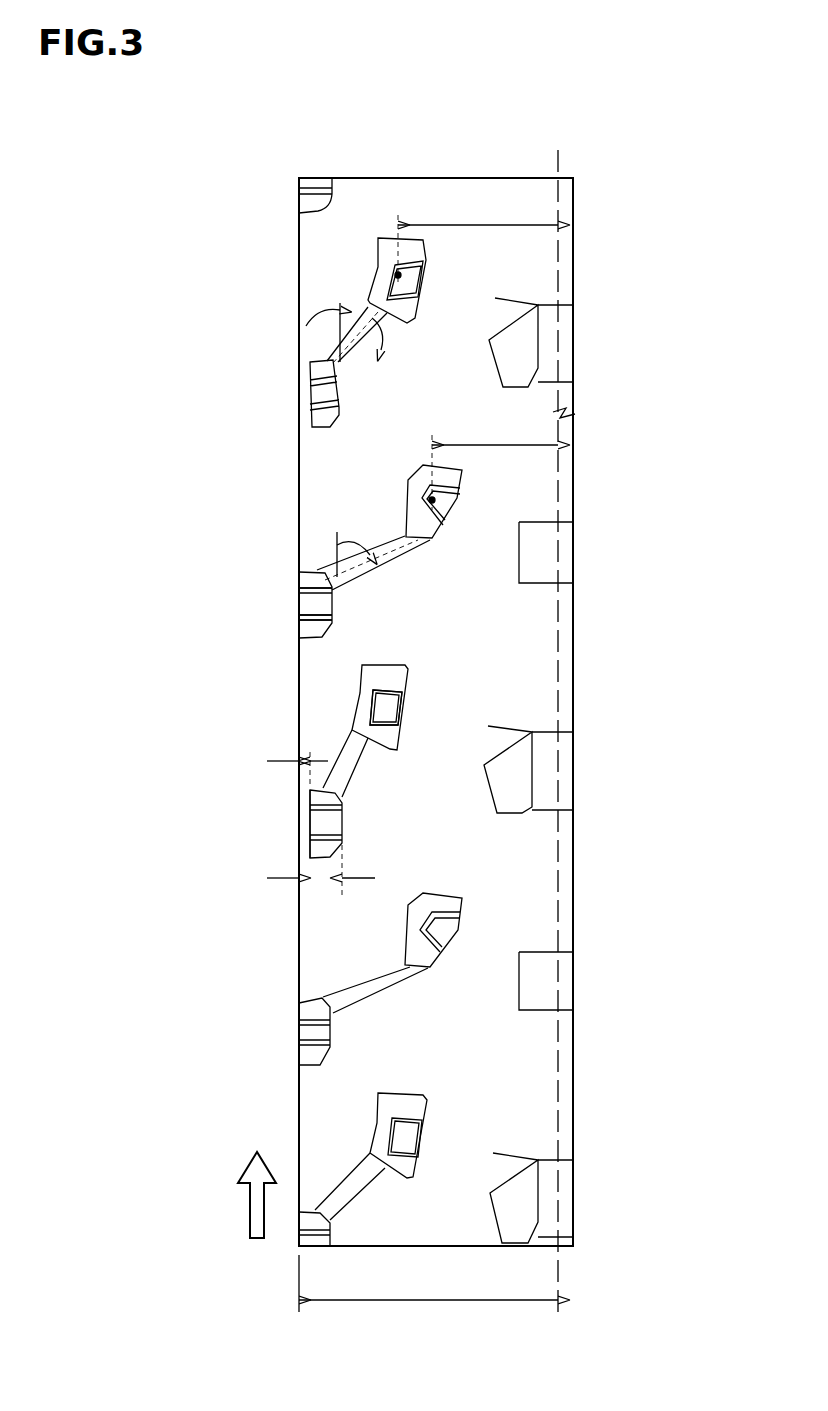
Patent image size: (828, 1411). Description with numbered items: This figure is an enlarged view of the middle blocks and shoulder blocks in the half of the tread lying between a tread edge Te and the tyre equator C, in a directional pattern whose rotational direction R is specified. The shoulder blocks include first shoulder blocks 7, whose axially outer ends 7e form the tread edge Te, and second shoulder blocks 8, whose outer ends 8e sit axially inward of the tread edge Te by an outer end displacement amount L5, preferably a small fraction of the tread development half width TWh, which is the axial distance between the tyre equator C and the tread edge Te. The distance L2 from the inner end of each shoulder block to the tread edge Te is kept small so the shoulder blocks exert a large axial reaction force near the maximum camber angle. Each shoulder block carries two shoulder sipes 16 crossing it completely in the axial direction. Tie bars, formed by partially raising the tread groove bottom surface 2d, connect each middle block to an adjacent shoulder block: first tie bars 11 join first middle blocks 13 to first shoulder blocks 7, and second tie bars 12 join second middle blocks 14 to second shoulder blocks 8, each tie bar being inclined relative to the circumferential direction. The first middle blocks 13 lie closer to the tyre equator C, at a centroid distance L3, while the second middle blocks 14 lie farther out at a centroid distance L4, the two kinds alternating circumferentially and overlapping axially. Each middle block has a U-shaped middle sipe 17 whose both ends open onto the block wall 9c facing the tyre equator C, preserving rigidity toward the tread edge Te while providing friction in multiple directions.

The tread groove bottom surface 2d is at (432, 203).
The tread edge Te is at (298, 203).
The tyre equator C is at (560, 718).
The first shoulder block 7 is at (313, 1033).
The outer end of first shoulder block 7e is at (299, 612).
The second shoulder block 8 is at (325, 823).
The outer end of second shoulder block 8e is at (309, 828).
The block wall 9c is at (423, 281).
The first tie bar 11 is at (361, 990).
The second tie bar 12 is at (355, 764).
The first middle block 13 is at (445, 931).
The second middle block 14 is at (408, 1135).
The shoulder sipe 16 is at (317, 584).
The middle sipe 17 is at (392, 720).
The distance between shoulder block inner end and tread edge L2 is at (321, 880).
The distance between tyre equator and first middle block centroid L3 is at (495, 465).
The distance between tyre equator and second middle block centroid L4 is at (478, 237).
The outer end displacement amount L5 is at (300, 758).
The tread development half width TWh is at (428, 1295).
The rotational direction R is at (257, 1181).